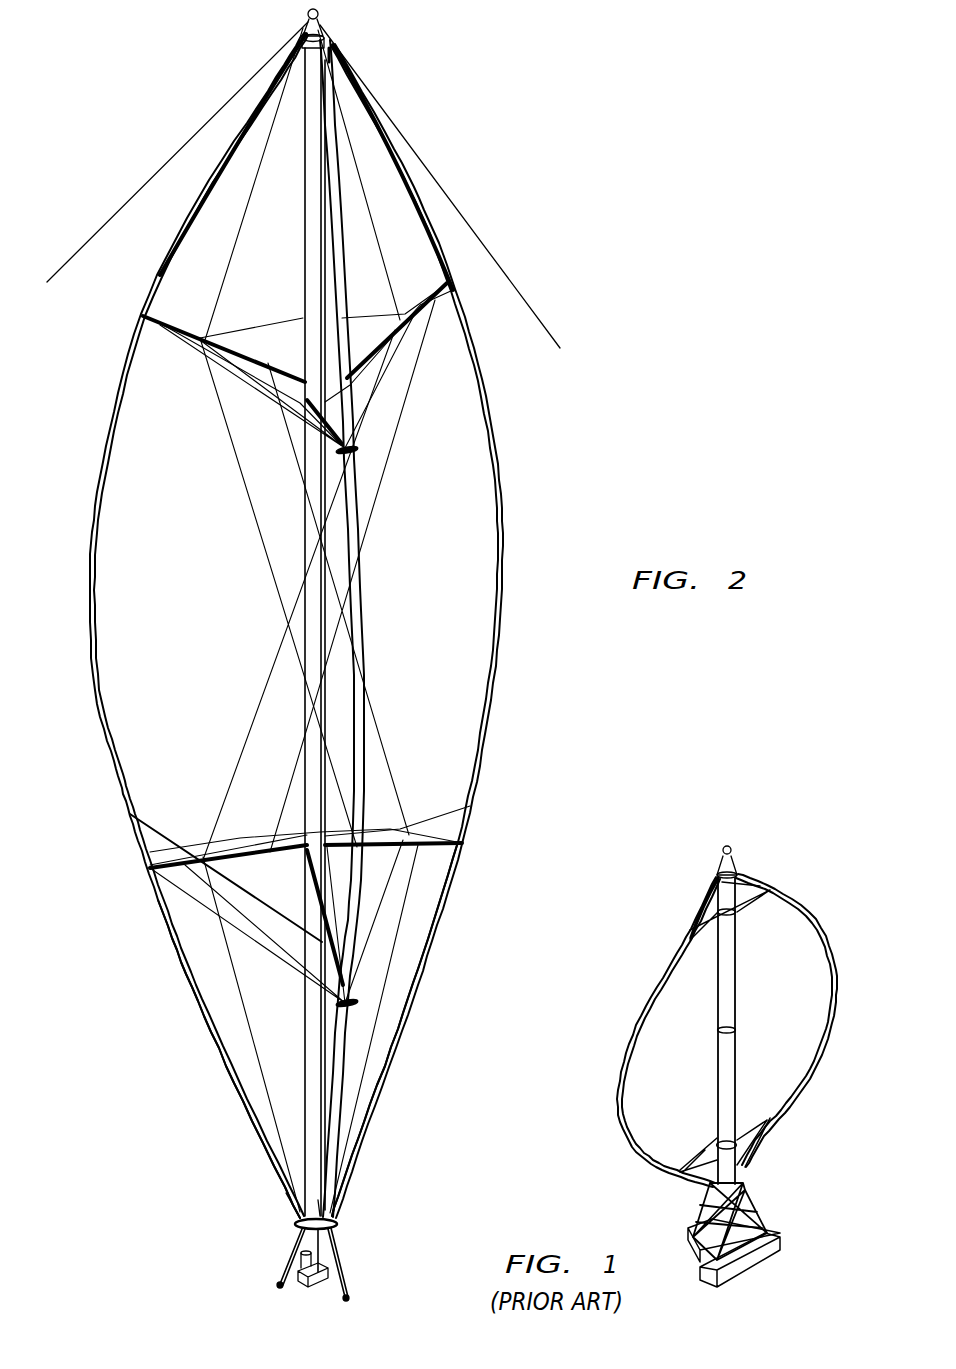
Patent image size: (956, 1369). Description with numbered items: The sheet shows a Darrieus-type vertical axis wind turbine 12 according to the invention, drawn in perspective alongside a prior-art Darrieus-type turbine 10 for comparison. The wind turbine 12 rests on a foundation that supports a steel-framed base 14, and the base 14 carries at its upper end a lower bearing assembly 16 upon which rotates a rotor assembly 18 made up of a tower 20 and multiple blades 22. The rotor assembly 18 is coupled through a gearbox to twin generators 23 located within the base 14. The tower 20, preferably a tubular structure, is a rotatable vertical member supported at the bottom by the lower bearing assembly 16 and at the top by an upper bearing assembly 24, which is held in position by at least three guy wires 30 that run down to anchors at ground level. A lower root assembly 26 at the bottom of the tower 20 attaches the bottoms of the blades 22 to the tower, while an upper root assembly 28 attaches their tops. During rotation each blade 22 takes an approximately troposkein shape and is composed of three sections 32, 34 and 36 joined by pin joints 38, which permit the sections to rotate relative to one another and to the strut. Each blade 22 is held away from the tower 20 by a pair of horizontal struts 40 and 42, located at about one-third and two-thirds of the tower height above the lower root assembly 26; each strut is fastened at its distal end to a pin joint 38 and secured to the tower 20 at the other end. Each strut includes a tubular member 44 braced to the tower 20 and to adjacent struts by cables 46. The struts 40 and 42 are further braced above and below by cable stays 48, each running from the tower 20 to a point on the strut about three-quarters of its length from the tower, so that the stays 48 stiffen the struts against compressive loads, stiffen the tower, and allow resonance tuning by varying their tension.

In FIG. 2, the wind turbine 12 is at (572, 440).
In FIG. 2, the base 14 is at (343, 1270).
In FIG. 2, the lower bearing assembly 16 is at (338, 1222).
In FIG. 2, the rotor assembly 18 is at (517, 652).
In FIG. 2, the tower 20 is at (305, 770).
In FIG. 2, the blades 22 is at (88, 545).
In FIG. 2, the twin generators 23 is at (305, 1283).
In FIG. 2, the upper bearing assembly 24 is at (324, 32).
In FIG. 2, the lower root assembly 26 is at (290, 1193).
In FIG. 2, the upper root assembly 28 is at (330, 54).
In FIG. 2, the guy wires 30 is at (148, 180).
In FIG. 2, the blade section 32 is at (203, 1023).
In FIG. 2, the blade section 34 is at (97, 687).
In FIG. 2, the blade section 36 is at (165, 258).
In FIG. 2, the pin joints 38 is at (447, 283).
In FIG. 2, the horizontal strut 40 is at (426, 848).
In FIG. 2, the horizontal strut 42 is at (442, 312).
In FIG. 2, the tubular member 44 is at (213, 402).
In FIG. 2, the cables 46 is at (263, 323).
In FIG. 2, the cable stays 48 is at (267, 133).
In FIG. 1, the prior art Darrieus wind turbine 10 is at (727, 1066).